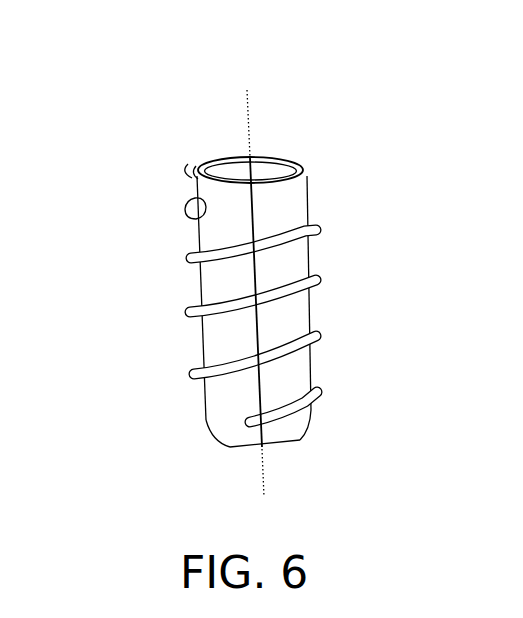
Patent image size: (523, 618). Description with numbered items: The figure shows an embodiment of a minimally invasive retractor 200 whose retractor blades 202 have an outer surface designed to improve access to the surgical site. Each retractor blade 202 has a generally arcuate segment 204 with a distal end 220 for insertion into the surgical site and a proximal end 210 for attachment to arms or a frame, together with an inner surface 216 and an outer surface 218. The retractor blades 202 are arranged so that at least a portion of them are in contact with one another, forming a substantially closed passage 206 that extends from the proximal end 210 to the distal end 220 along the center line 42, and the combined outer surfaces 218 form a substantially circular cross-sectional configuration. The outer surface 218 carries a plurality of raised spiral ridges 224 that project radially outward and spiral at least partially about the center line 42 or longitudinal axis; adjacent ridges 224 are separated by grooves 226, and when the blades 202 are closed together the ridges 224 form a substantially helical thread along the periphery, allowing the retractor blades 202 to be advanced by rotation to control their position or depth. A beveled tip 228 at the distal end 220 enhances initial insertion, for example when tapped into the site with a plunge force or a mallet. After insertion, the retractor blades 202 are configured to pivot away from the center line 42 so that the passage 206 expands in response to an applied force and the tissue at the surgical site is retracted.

The retractor blade 202 is at (137, 138).
The arcuate segment 204 is at (287, 208).
The passage 206 is at (246, 88).
The proximal end 210 is at (222, 157).
The inner surface 216 is at (268, 168).
The outer surface 218 is at (217, 403).
The distal end 220 is at (227, 449).
The spiral ridge 224 is at (193, 315).
The groove 226 is at (220, 285).
The beveled tip 228 is at (303, 436).
The center line 42 is at (263, 480).
The retractor 200 is at (442, 615).